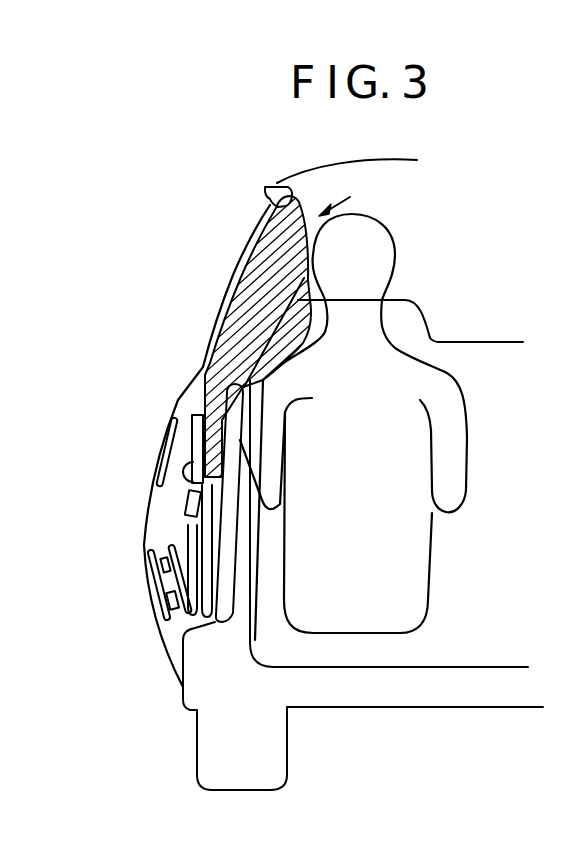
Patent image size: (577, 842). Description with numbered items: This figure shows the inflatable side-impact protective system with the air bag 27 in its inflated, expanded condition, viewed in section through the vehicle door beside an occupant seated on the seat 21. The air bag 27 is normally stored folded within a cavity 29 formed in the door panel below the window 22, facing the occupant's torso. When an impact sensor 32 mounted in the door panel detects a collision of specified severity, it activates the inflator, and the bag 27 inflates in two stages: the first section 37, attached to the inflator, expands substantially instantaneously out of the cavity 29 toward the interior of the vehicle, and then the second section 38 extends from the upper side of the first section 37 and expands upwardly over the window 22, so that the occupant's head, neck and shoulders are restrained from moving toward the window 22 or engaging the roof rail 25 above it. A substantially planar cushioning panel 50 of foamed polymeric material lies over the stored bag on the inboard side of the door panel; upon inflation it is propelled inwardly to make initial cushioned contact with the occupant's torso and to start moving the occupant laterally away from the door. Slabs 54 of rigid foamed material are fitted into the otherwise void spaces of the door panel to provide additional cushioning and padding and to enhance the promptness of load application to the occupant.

The seat 21 is at (480, 340).
The window 22 is at (237, 277).
The roof rail 25 is at (273, 190).
The air bag 27 is at (353, 195).
The cavity 29 is at (186, 425).
The impact sensor 32 is at (167, 572).
The first section 37 is at (208, 438).
The second section 38 is at (240, 327).
The cushioning panel 50 is at (233, 420).
The slabs 54 is at (162, 490).